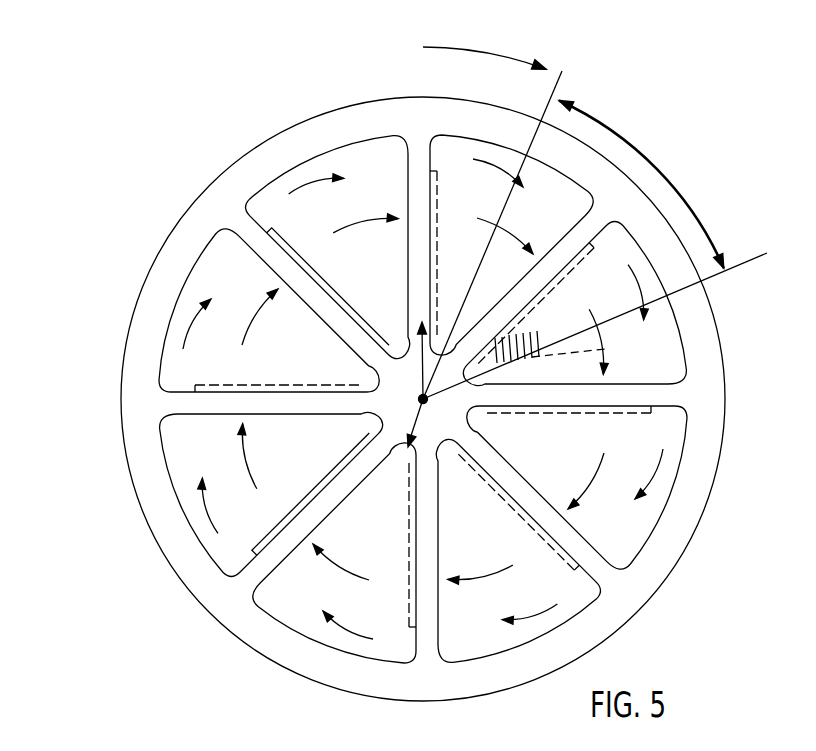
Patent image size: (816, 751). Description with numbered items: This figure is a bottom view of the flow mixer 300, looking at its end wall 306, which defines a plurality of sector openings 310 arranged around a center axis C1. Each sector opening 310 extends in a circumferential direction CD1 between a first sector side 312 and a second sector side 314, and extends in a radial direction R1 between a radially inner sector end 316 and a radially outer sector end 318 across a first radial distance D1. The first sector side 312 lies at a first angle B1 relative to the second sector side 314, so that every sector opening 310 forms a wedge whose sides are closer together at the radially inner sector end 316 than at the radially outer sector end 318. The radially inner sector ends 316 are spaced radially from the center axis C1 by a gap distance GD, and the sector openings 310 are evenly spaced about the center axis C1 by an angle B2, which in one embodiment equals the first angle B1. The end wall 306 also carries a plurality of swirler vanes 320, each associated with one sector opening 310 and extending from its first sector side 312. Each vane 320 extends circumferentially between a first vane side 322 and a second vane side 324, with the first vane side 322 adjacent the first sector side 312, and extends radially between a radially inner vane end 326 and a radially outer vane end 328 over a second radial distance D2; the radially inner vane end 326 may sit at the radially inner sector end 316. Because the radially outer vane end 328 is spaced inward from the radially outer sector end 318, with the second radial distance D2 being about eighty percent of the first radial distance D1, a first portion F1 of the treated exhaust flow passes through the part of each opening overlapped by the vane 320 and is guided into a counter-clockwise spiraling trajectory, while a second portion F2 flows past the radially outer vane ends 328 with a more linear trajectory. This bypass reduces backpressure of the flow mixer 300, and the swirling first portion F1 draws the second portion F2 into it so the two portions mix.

The flow mixer 300 is at (87, 181).
The end wall 306 is at (306, 117).
The sector openings 310 is at (163, 332).
The first sector side 312 is at (256, 203).
The second sector side 314 is at (400, 154).
The radially inner sector end 316 is at (430, 357).
The radially outer sector end 318 is at (357, 139).
The swirler vanes 320 is at (550, 583).
The first vane side 322 is at (315, 497).
The second vane side 324 is at (242, 448).
The radially inner vane end 326 is at (357, 425).
The radially outer vane end 328 is at (240, 520).
The angle B2 is at (650, 158).
The circumferential direction CD1 is at (486, 44).
The radial direction R1 is at (441, 347).
The center axis C1 is at (427, 402).
The first radial distance D1 is at (343, 188).
The second radial distance D2 is at (290, 267).
The first angle B1 is at (352, 372).
The first portion of the treated exhaust flow F1 is at (605, 452).
The second portion of the treated exhaust flow F2 is at (637, 491).
The gap distance GD is at (451, 452).